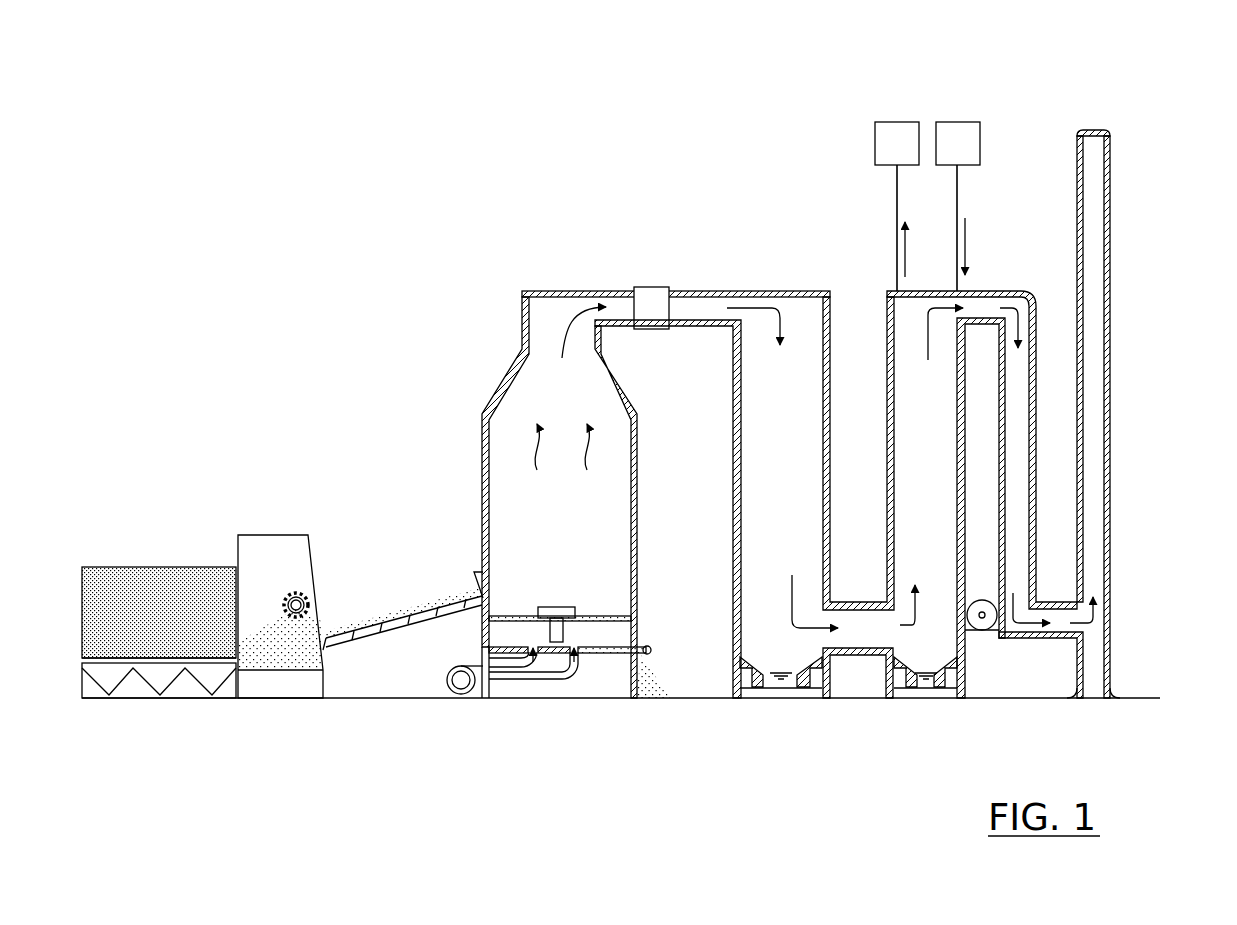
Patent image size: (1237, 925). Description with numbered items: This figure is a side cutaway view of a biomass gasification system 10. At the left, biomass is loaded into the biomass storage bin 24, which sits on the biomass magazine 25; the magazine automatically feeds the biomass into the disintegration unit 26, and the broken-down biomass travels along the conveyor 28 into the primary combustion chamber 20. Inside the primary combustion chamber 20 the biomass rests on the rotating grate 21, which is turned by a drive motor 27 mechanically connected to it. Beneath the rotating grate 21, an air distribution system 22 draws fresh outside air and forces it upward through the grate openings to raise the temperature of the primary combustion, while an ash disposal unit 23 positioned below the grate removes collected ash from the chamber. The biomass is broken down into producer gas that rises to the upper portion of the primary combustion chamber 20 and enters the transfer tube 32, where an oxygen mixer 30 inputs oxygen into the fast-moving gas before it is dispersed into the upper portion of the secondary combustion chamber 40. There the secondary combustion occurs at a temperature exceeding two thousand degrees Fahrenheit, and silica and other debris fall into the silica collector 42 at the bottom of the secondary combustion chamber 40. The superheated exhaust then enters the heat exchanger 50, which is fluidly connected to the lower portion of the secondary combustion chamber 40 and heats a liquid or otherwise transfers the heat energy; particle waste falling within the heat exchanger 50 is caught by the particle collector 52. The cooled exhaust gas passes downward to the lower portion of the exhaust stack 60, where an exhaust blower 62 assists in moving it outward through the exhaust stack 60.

The biomass gasification system 10 is at (1062, 115).
The primary combustion chamber 20 is at (481, 464).
The rotating grate 21 is at (607, 616).
The air distribution system 22 is at (462, 688).
The ash disposal unit 23 is at (652, 647).
The biomass storage bin 24 is at (157, 567).
The biomass magazine 25 is at (173, 692).
The disintegration unit 26 is at (275, 543).
The drive motor 27 is at (548, 643).
The conveyor 28 is at (380, 643).
The oxygen mixer 30 is at (651, 294).
The transfer tube 32 is at (560, 290).
The secondary combustion chamber 40 is at (832, 325).
The silica collector 42 is at (768, 690).
The heat exchanger 50 is at (885, 325).
The particle collector 52 is at (900, 690).
The exhaust stack 60 is at (1113, 452).
The exhaust blower 62 is at (985, 632).